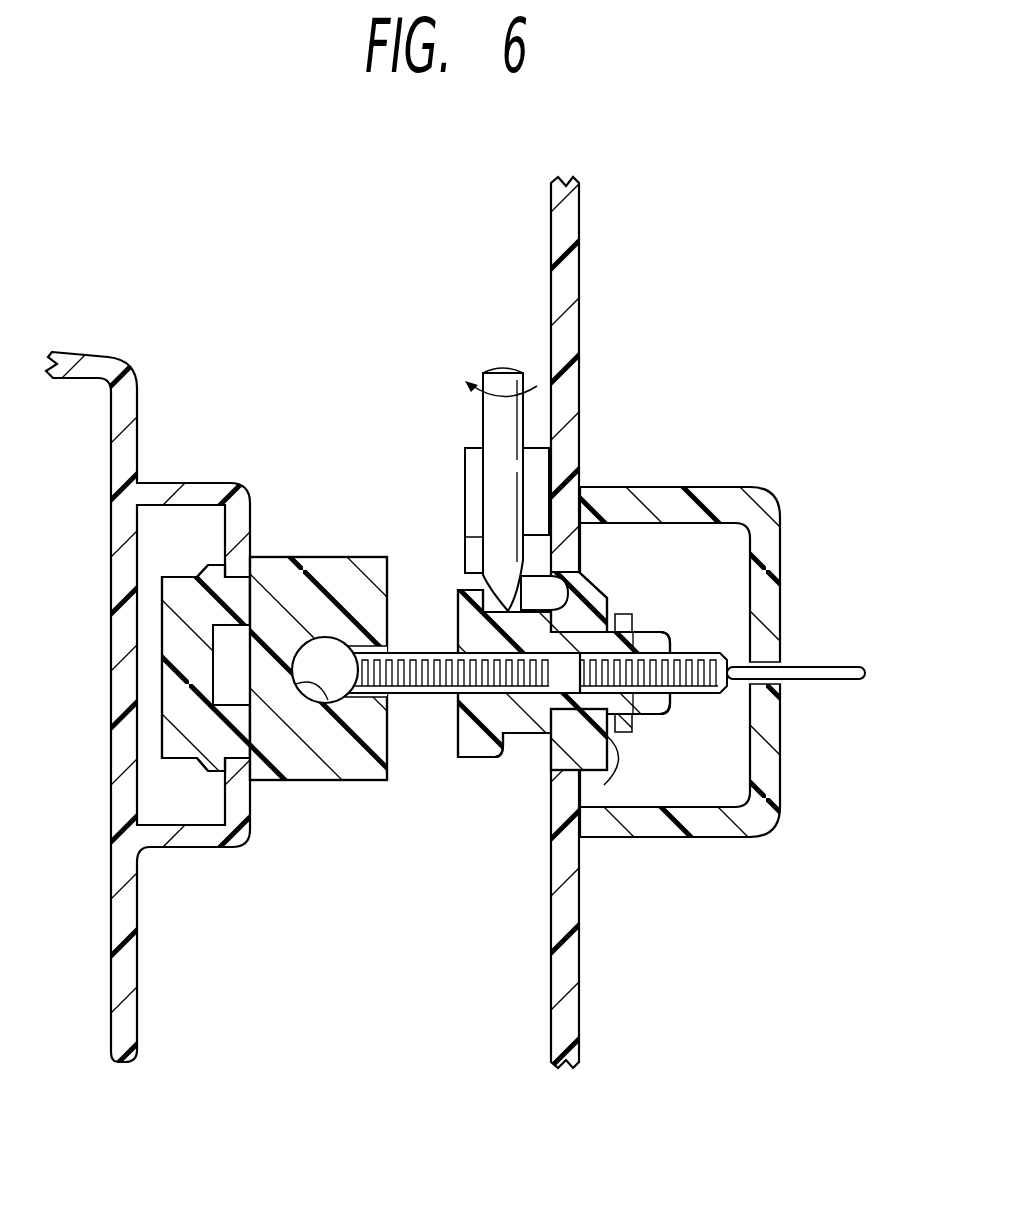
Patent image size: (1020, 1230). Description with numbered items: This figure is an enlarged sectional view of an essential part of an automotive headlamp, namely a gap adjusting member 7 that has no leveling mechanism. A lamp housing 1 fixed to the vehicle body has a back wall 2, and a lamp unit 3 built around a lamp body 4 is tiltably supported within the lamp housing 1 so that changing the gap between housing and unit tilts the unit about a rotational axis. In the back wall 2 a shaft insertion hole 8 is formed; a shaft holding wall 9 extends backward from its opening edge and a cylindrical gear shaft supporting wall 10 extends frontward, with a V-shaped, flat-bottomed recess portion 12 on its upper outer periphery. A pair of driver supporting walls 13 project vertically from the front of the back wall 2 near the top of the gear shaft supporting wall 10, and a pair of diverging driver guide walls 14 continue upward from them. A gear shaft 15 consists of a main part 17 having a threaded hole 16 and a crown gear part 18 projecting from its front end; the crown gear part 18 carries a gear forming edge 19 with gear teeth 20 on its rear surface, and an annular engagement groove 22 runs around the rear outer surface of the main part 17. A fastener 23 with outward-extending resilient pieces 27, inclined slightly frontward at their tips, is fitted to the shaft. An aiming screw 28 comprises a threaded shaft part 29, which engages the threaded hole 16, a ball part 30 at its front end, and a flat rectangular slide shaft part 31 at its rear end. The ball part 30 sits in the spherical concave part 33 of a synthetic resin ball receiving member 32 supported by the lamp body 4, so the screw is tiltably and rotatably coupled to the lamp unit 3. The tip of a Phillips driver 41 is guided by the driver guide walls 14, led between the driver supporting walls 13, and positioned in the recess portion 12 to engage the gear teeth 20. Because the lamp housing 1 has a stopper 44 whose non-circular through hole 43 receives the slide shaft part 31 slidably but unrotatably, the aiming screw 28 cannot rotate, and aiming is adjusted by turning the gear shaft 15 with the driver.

The lamp housing 1 is at (585, 222).
The back wall 2 is at (580, 1052).
The lamp unit 3 is at (76, 350).
The lamp body 4 is at (138, 1038).
The gap adjusting member 7 is at (372, 410).
The shaft insertion hole 8 is at (558, 600).
The shaft holding wall 9 is at (592, 585).
The gear shaft supporting wall 10 is at (535, 738).
The recess portion 12 is at (548, 578).
The driver supporting walls 13 is at (500, 600).
The driver guide walls 14 is at (466, 452).
The gear shaft 15 is at (683, 703).
The threaded hole 16 is at (657, 703).
The main part 17 is at (463, 548).
The crown gear part 18 is at (435, 697).
The gear forming edge 19 is at (505, 755).
The gear teeth 20 is at (492, 594).
The engagement groove 22 is at (632, 615).
The fastener 23 is at (632, 703).
The resilient pieces 27 is at (634, 630).
The aiming screw 28 is at (365, 692).
The threaded shaft part 29 is at (706, 703).
The ball part 30 is at (280, 557).
The slide shaft part 31 is at (845, 678).
The ball receiving member 32 is at (253, 845).
The spherical concave part 33 is at (318, 702).
The Phillips driver 41 is at (505, 437).
The through hole 43 is at (780, 644).
The stopper 44 is at (772, 565).